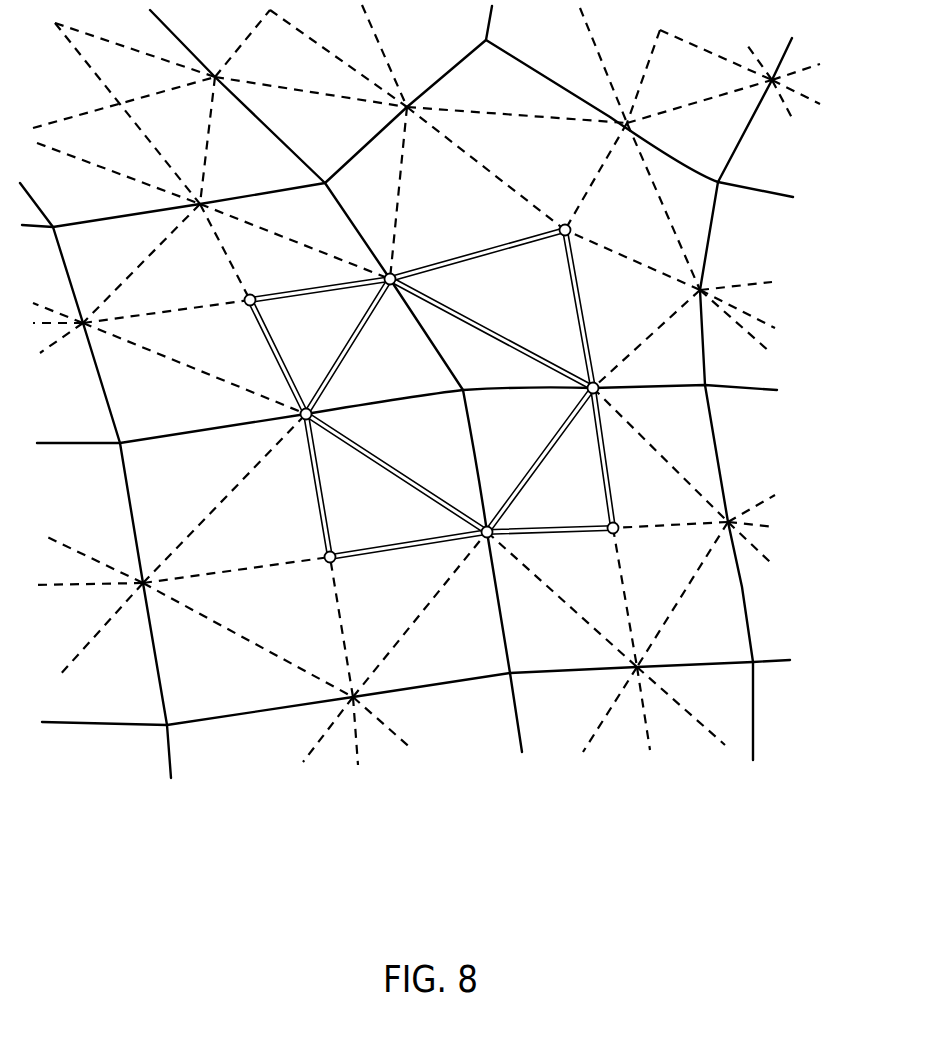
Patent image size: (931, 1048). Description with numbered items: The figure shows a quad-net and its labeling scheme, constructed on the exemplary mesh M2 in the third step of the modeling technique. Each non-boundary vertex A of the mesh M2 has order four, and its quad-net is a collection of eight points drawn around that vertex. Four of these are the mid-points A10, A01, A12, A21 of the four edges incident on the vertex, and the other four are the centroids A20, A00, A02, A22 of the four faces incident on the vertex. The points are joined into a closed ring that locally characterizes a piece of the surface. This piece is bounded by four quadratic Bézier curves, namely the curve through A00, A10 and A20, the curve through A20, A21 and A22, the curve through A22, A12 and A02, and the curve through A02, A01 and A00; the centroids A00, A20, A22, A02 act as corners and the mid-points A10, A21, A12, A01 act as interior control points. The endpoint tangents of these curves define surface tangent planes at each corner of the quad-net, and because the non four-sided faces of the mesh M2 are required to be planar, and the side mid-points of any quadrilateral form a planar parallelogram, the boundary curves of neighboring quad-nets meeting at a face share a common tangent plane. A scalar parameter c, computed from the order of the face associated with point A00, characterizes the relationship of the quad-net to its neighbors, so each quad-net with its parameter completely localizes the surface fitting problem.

The face centroid A00 is at (596, 209).
The edge mid-point A10 is at (414, 252).
The face centroid A20 is at (219, 279).
The edge mid-point A01 is at (618, 361).
The edge mid-point A21 is at (272, 394).
The face centroid A02 is at (642, 507).
The face centroid A22 is at (303, 538).
The edge mid-point A12 is at (518, 555).
The mesh M2 is at (713, 423).